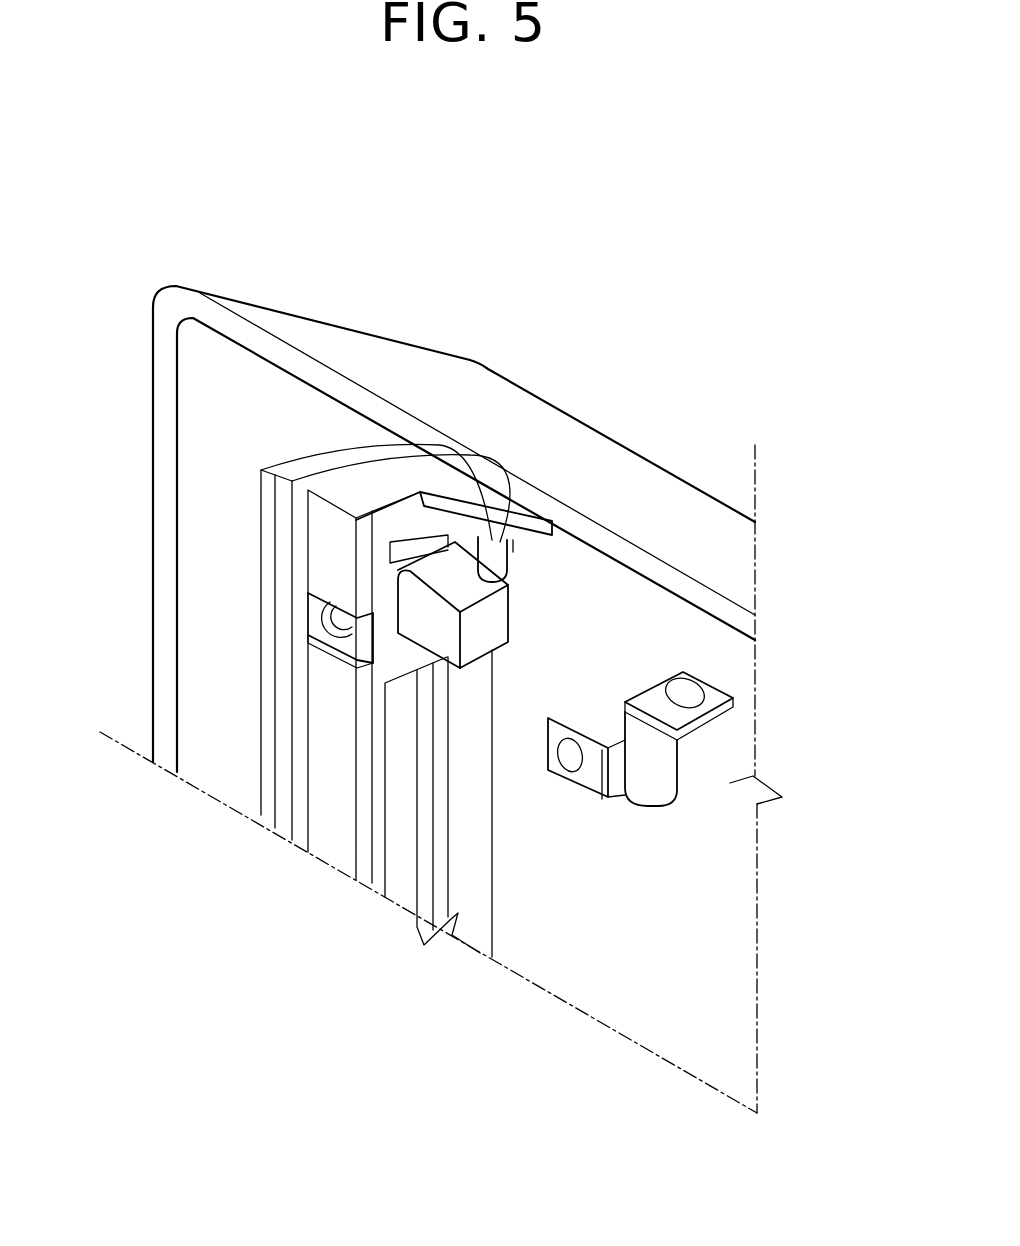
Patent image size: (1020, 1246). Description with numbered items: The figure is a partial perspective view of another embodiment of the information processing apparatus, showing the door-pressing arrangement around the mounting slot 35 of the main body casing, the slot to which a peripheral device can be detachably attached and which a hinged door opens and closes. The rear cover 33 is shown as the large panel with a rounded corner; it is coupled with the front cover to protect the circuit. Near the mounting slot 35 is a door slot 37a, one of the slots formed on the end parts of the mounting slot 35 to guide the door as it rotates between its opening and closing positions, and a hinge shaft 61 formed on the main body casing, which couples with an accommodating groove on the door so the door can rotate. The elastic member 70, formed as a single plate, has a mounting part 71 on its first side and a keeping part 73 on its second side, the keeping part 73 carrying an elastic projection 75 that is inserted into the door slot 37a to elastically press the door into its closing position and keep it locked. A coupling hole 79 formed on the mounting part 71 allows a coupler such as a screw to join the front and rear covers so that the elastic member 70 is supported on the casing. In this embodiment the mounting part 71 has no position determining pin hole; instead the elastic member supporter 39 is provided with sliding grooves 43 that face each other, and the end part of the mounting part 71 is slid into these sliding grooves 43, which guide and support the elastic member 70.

The rear cover 33 is at (202, 303).
The mounting slot 35 is at (387, 850).
The door slot 37a is at (446, 518).
The hinge shaft 61 is at (492, 552).
The elastic member supporter 39 is at (320, 612).
The sliding grooves 43 is at (340, 653).
The elastic member 70 is at (683, 864).
The mounting part 71 is at (610, 800).
The keeping part 73 is at (695, 712).
The elastic projection 75 is at (739, 705).
The coupling hole 79 is at (565, 773).